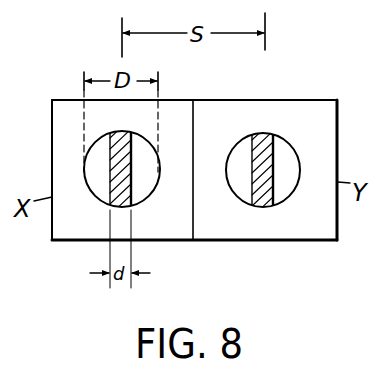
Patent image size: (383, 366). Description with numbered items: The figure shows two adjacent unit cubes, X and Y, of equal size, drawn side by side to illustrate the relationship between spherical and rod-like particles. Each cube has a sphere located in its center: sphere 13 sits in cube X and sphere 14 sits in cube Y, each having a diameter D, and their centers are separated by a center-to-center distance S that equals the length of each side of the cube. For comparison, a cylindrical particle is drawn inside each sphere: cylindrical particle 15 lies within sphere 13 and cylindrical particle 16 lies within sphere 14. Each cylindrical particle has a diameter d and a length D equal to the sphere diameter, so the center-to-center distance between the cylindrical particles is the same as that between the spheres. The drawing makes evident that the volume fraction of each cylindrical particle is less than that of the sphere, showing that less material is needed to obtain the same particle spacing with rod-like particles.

The sphere 13 is at (95, 153).
The sphere 14 is at (285, 145).
The cylindrical particle 15 is at (110, 165).
The cylindrical particle 16 is at (272, 172).